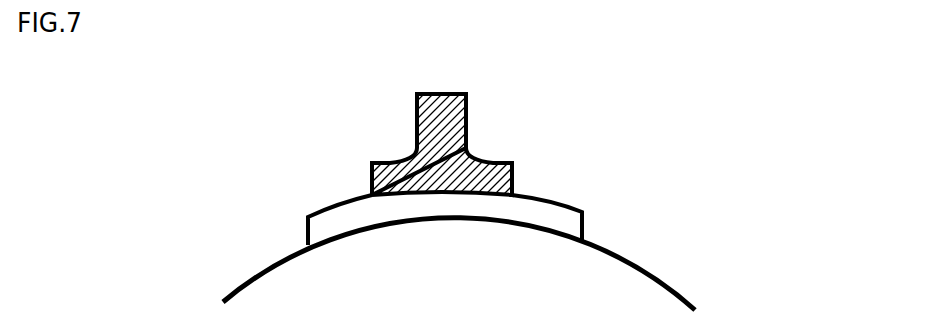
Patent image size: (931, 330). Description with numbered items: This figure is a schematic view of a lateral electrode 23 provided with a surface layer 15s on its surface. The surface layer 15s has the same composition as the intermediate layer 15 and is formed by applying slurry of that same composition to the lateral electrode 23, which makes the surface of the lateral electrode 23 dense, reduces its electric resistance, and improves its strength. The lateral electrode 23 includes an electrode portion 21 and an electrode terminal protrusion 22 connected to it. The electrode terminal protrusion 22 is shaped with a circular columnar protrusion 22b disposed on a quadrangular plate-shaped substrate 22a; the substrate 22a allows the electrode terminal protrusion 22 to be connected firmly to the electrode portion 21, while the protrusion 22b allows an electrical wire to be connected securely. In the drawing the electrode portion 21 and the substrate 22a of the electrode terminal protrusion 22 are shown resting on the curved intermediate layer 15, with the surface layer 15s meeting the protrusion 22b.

The intermediate layer 15 is at (672, 288).
The surface layer 15s is at (390, 162).
The electrode portion 21 is at (563, 230).
The electrode terminal protrusion 22 is at (504, 144).
The substrate 22a is at (493, 182).
The protrusion 22b is at (460, 123).
The lateral electrode 23 is at (544, 166).